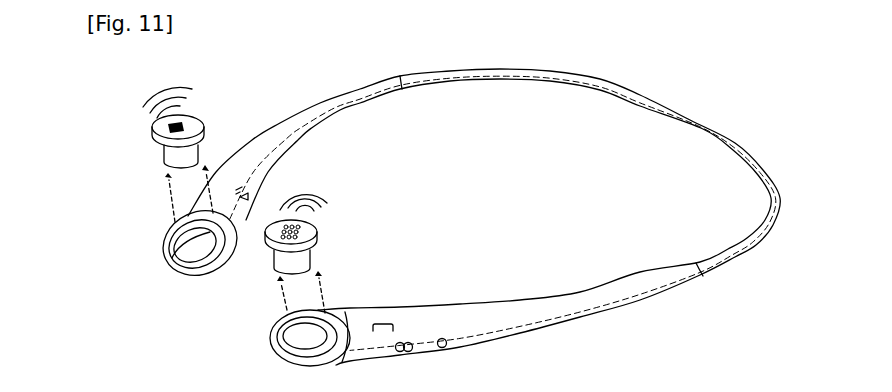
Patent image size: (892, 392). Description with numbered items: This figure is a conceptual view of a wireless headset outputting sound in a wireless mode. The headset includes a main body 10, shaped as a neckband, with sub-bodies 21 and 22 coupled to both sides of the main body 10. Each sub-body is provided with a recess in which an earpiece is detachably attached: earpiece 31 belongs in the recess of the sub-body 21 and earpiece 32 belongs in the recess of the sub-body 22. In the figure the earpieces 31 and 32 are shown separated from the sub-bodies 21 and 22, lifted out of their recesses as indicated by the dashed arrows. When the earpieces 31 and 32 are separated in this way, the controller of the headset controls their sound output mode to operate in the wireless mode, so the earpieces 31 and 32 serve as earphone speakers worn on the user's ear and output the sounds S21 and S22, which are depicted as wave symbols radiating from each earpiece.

The main body 10 is at (623, 290).
The sub-body 21 is at (180, 267).
The sub-body 22 is at (280, 351).
The earpiece 31 is at (162, 128).
The earpiece 32 is at (308, 228).
The sound S21 is at (167, 90).
The sound S22 is at (303, 187).